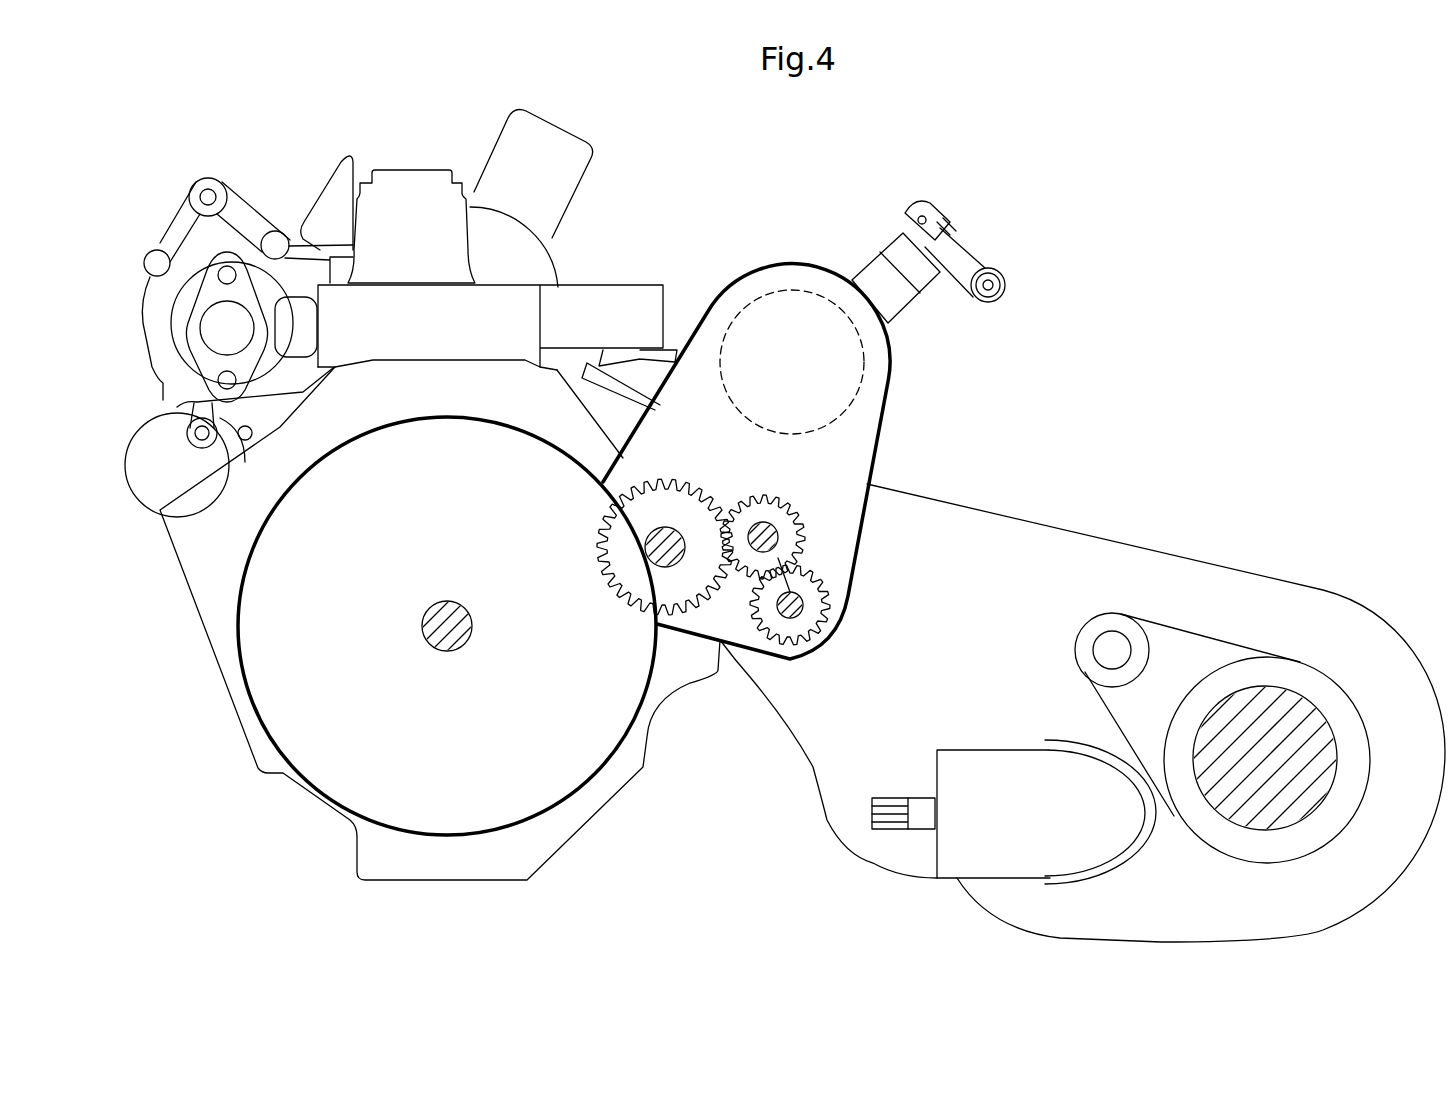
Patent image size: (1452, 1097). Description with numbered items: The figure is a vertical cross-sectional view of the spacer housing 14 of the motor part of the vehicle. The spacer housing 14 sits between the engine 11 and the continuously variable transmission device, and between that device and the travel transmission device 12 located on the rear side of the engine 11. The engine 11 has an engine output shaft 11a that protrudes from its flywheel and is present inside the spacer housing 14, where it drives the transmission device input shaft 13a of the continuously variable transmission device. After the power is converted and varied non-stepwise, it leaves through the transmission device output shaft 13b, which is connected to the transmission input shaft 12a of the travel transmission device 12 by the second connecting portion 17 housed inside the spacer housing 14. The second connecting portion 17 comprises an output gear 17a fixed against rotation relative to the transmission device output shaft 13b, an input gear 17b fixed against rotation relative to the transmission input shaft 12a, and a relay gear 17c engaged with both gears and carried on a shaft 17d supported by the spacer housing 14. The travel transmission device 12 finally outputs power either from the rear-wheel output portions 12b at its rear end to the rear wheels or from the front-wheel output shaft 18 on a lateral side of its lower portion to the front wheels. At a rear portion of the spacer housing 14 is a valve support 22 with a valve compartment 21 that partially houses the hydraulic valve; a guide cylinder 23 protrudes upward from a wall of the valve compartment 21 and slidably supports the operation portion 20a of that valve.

The engine 11 is at (350, 218).
The engine output shaft 11a is at (428, 580).
The transmission device input shaft 13a is at (440, 613).
The transmission device output shaft 13b is at (648, 553).
The travel transmission device 12 is at (1082, 703).
The transmission input shaft 12a is at (795, 617).
The rear-wheel output portions 12b is at (1303, 703).
The spacer housing 14 is at (578, 788).
The second connecting portion 17 is at (732, 625).
The output gear 17a is at (620, 563).
The input gear 17b is at (810, 605).
The relay gear 17c is at (800, 553).
The shaft 17d is at (773, 538).
The front-wheel output shaft 18 is at (890, 817).
The operation portion 20a is at (940, 232).
The valve compartment 21 is at (867, 373).
The valve support 22 is at (752, 288).
The guide cylinder 23 is at (878, 282).